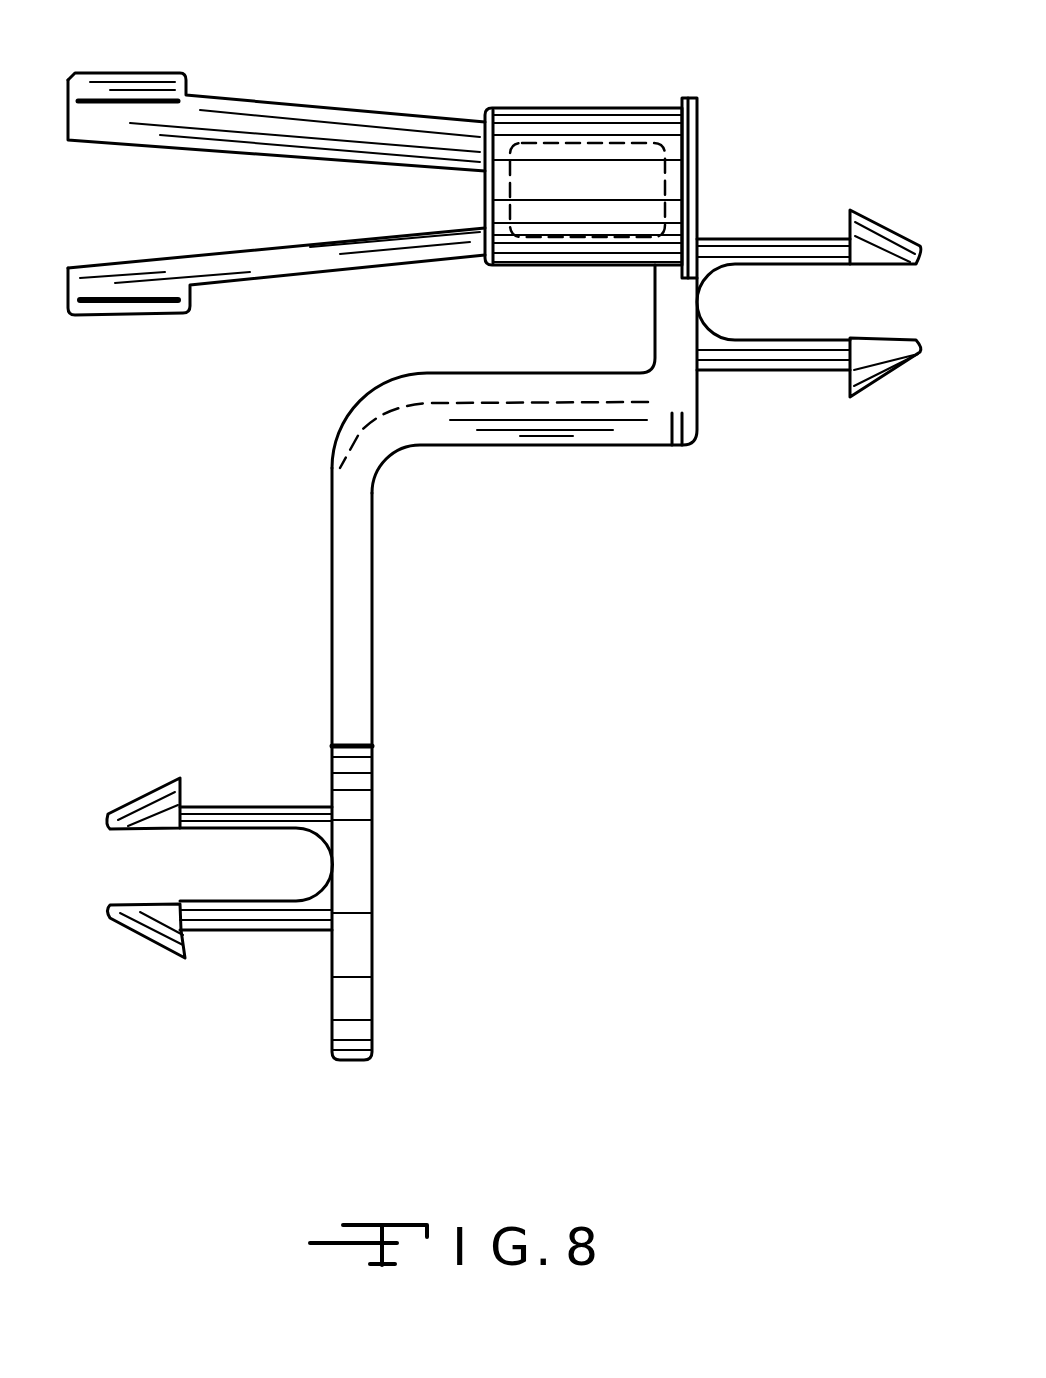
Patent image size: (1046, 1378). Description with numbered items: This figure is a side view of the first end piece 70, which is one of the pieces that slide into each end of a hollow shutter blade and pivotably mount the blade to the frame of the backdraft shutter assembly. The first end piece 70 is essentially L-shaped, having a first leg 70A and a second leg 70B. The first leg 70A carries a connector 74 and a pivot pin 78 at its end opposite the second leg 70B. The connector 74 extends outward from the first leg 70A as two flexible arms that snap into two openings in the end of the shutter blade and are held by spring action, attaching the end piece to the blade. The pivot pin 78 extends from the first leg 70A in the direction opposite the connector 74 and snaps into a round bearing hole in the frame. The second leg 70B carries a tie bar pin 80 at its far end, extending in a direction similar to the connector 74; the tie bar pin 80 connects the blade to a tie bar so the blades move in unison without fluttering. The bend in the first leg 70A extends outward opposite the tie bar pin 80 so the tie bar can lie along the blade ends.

The first end piece 70 is at (200, 531).
The first leg 70A is at (562, 436).
The second leg 70B is at (362, 685).
The connector 74 is at (320, 125).
The pivot pin 78 is at (783, 240).
The tie bar pin 80 is at (246, 805).